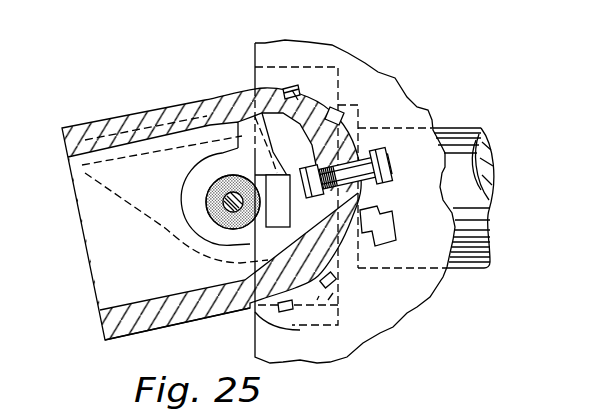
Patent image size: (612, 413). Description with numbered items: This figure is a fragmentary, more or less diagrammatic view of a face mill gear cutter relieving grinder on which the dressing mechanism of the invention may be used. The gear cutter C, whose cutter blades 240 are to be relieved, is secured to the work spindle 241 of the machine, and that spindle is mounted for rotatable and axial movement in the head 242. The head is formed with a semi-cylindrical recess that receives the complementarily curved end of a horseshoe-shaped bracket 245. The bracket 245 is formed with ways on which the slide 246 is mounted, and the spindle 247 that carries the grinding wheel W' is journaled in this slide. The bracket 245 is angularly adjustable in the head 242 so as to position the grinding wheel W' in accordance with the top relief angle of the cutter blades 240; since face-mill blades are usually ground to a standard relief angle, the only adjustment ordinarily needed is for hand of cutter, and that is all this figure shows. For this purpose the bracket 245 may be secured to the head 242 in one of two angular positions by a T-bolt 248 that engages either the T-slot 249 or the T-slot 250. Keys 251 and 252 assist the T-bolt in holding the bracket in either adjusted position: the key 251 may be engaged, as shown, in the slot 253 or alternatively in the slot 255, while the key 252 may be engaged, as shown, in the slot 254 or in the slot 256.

The cutter blades 240 is at (272, 228).
The work spindle 241 is at (483, 233).
The head 242 is at (414, 304).
The bracket 245 is at (178, 312).
The slide 246 is at (156, 216).
The spindle 247 is at (223, 201).
The T-bolt 248 is at (364, 160).
The T-slot 249 is at (393, 178).
The T-slot 250 is at (394, 230).
The key 251 is at (291, 86).
The key 252 is at (338, 284).
The slot 253 is at (290, 84).
The slot 254 is at (333, 293).
The slot 255 is at (341, 110).
The slot 256 is at (282, 313).
The grinding wheel W' is at (206, 196).
The gear cutter C is at (318, 300).